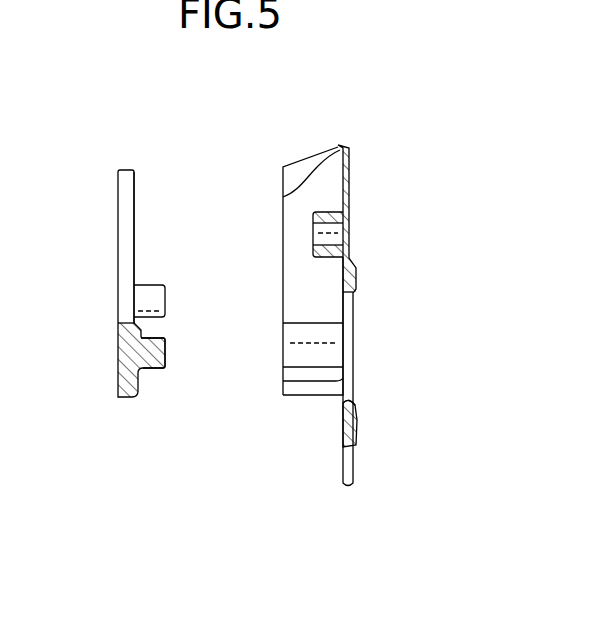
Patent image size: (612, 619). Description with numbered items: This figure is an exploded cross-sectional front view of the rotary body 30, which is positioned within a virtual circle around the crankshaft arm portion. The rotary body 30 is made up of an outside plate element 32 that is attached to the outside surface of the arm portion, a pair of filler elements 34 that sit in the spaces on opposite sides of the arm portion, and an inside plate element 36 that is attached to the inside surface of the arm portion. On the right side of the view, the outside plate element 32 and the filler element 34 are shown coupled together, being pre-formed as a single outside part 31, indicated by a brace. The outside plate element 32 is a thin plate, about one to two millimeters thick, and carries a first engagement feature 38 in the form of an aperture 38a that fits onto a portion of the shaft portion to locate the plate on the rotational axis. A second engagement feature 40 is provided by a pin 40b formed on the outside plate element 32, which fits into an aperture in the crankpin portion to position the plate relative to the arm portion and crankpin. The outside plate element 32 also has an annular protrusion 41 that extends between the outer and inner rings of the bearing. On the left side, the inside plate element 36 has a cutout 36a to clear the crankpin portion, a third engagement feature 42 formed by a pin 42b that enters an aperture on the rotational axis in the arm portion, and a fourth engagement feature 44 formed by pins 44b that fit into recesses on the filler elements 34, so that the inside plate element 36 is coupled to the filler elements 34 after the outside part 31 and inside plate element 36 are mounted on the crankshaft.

The rotary body 30 is at (224, 151).
The outside part 31 is at (372, 540).
The outside plate element 32 is at (348, 488).
The filler element 34 is at (297, 397).
The inside plate element 36 is at (124, 396).
The cutout 36a is at (128, 200).
The first engagement feature 38 is at (412, 397).
The aperture 38a is at (353, 405).
The second engagement feature 40 is at (395, 216).
The pin 40b is at (328, 212).
The annular protrusion 41 is at (356, 428).
The third engagement feature 42 is at (179, 392).
The pin 42b is at (152, 370).
The fourth engagement feature 44 is at (183, 276).
The pin 44b is at (152, 285).